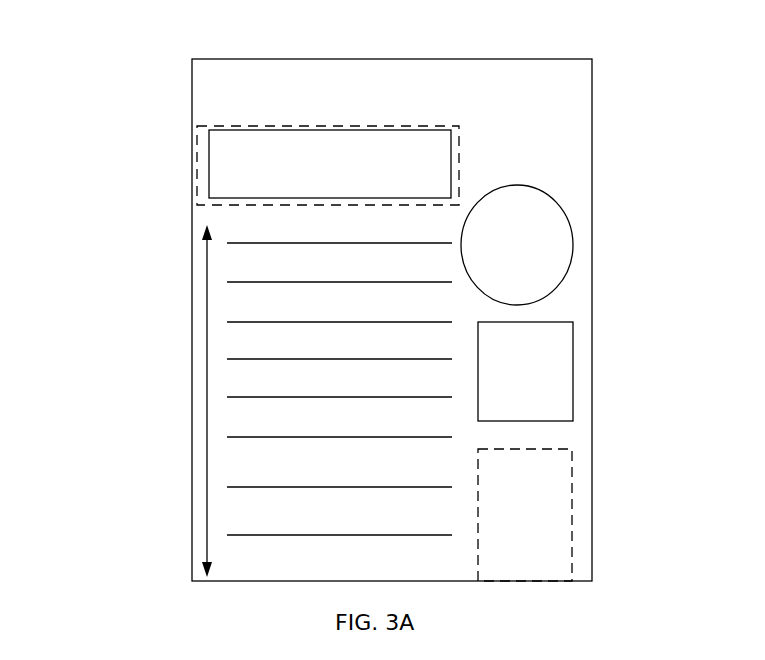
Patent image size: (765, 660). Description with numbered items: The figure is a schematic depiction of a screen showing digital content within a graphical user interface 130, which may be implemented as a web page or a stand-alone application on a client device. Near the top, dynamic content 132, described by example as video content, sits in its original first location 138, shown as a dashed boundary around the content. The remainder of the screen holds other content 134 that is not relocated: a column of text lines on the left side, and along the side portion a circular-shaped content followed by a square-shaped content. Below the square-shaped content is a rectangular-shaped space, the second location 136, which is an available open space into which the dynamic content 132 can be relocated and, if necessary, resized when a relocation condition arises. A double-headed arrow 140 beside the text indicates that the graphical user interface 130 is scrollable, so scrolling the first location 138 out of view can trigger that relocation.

The graphical user interface 130 is at (150, 48).
The dynamic content 132 is at (225, 167).
The other content 134 is at (235, 322).
The second location 136 is at (572, 524).
The first location 138 is at (459, 128).
The arrow 140 is at (207, 393).